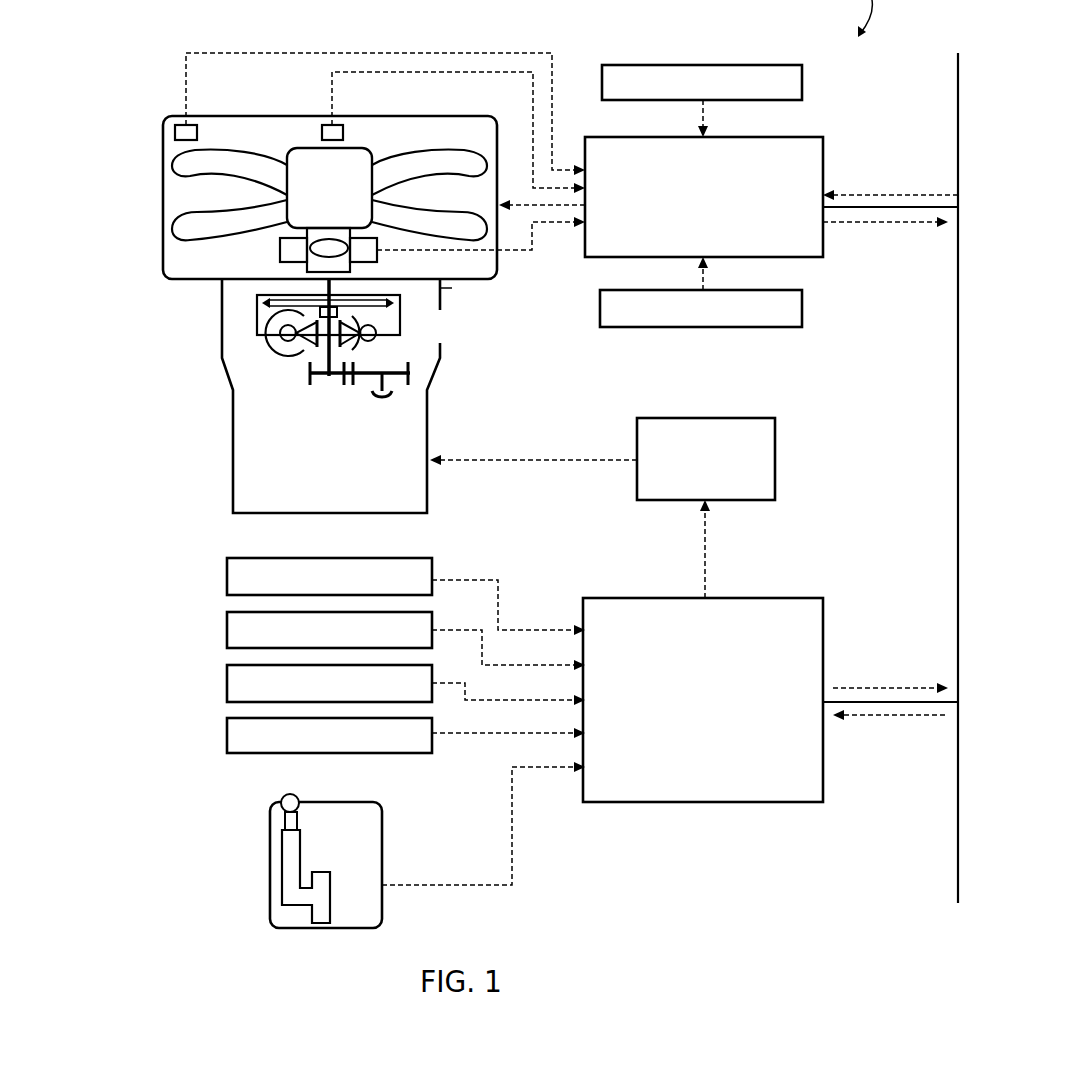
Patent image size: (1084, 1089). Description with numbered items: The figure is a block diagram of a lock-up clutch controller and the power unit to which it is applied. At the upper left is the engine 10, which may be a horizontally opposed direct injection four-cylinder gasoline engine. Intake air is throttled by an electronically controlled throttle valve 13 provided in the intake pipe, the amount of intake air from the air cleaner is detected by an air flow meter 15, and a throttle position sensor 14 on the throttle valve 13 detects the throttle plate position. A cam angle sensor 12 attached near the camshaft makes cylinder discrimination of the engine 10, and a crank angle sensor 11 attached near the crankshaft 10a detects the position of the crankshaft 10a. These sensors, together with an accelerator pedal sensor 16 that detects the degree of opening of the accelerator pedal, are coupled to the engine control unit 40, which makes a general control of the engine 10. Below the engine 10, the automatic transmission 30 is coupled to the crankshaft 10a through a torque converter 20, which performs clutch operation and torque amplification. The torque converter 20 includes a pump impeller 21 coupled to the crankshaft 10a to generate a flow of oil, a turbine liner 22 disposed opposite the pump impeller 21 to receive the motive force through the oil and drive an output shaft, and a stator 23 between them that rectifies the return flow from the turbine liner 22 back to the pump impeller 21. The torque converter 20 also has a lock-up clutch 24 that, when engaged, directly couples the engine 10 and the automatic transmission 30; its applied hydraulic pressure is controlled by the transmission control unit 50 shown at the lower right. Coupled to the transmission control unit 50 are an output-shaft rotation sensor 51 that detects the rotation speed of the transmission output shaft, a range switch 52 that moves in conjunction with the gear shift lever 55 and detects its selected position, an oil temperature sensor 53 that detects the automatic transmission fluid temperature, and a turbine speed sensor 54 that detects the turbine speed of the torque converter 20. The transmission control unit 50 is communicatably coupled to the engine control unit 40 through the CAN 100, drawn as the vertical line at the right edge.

The engine 10 is at (162, 203).
The crankshaft 10a is at (314, 294).
The crank angle sensor 11 is at (343, 129).
The cam angle sensor 12 is at (196, 130).
The throttle valve 13 is at (330, 240).
The throttle position sensor 14 is at (378, 254).
The air flow meter 15 is at (803, 80).
The accelerator pedal sensor 16 is at (803, 307).
The torque converter 20 is at (102, 280).
The pump impeller 21 is at (266, 348).
The turbine liner 22 is at (260, 311).
The stator 23 is at (287, 333).
The lock-up clutch 24 is at (400, 309).
The automatic transmission 30 is at (233, 440).
The engine control unit 40 is at (824, 165).
The transmission control unit 50 is at (824, 650).
The output-shaft rotation sensor 51 is at (227, 580).
The range switch 52 is at (227, 630).
The oil temperature sensor 53 is at (227, 683).
The turbine speed sensor 54 is at (227, 735).
The gear shift lever 55 is at (280, 802).
The CAN 100 is at (958, 402).